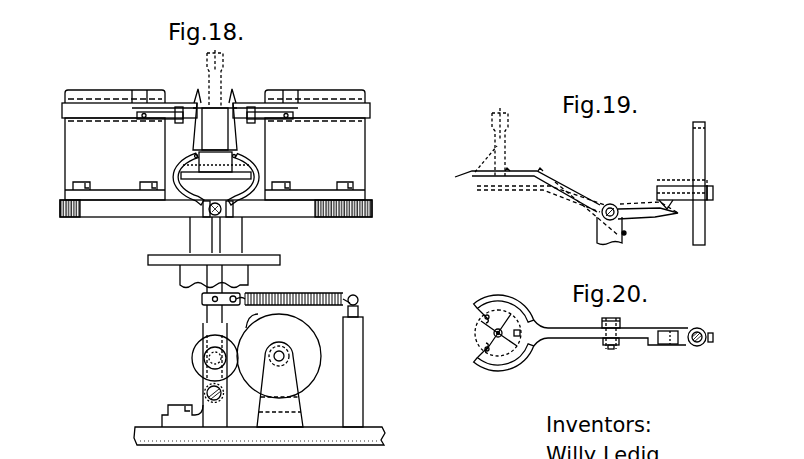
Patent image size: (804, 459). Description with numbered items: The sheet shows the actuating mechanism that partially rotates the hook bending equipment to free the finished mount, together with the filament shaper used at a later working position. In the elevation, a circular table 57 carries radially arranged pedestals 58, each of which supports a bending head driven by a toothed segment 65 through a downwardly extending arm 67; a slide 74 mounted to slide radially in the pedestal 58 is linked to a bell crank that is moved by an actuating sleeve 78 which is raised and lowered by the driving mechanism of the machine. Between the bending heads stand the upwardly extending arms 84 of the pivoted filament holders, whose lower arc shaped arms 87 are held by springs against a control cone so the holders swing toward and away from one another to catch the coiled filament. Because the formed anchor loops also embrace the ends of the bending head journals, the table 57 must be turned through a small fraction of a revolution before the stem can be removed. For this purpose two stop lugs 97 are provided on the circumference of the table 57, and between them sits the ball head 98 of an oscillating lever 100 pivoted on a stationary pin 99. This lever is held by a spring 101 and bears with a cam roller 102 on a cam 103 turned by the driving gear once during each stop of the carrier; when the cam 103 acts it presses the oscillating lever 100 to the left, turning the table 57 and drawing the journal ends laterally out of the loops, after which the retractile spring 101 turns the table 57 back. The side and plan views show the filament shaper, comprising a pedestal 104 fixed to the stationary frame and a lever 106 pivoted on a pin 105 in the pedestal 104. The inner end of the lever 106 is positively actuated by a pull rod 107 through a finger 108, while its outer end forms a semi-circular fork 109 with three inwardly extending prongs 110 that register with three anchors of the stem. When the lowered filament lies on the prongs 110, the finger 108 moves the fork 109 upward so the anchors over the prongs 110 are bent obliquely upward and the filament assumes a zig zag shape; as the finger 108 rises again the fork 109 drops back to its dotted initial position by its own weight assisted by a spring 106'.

In FIG. 18, the circular table 57 is at (358, 217).
In FIG. 18, the pedestal 58 is at (107, 90).
In FIG. 18, the toothed segment 65 is at (188, 100).
In FIG. 18, the downwardly extending arm 67 is at (178, 122).
In FIG. 18, the slide 74 is at (62, 101).
In FIG. 18, the actuating sleeve 78 is at (275, 255).
In FIG. 18, the filament holder arm 84 is at (200, 125).
In FIG. 18, the lower arc shaped arm 87 is at (258, 166).
In FIG. 18, the stop lug 97 is at (203, 212).
In FIG. 18, the ball head 98 is at (212, 217).
In FIG. 18, the stationary pin 99 is at (224, 394).
In FIG. 18, the oscillating lever 100 is at (207, 328).
In FIG. 18, the spring 101 is at (302, 292).
In FIG. 18, the cam roller 102 is at (192, 359).
In FIG. 18, the cam 103 is at (305, 338).
In FIG. 19, the pedestal 104 is at (598, 231).
In FIG. 20, the pedestal 104 is at (599, 347).
In FIG. 19, the pin 105 is at (612, 203).
In FIG. 20, the pin 105 is at (616, 349).
In FIG. 19, the lever 106 is at (547, 208).
In FIG. 19, the spring 106' is at (648, 223).
In FIG. 19, the pull rod 107 is at (697, 140).
In FIG. 20, the pull rod 107 is at (698, 329).
In FIG. 19, the finger 108 is at (665, 185).
In FIG. 20, the finger 108 is at (684, 344).
In FIG. 19, the semi-circular fork 109 is at (519, 190).
In FIG. 20, the semi-circular fork 109 is at (500, 300).
In FIG. 20, the prong 110 is at (478, 354).